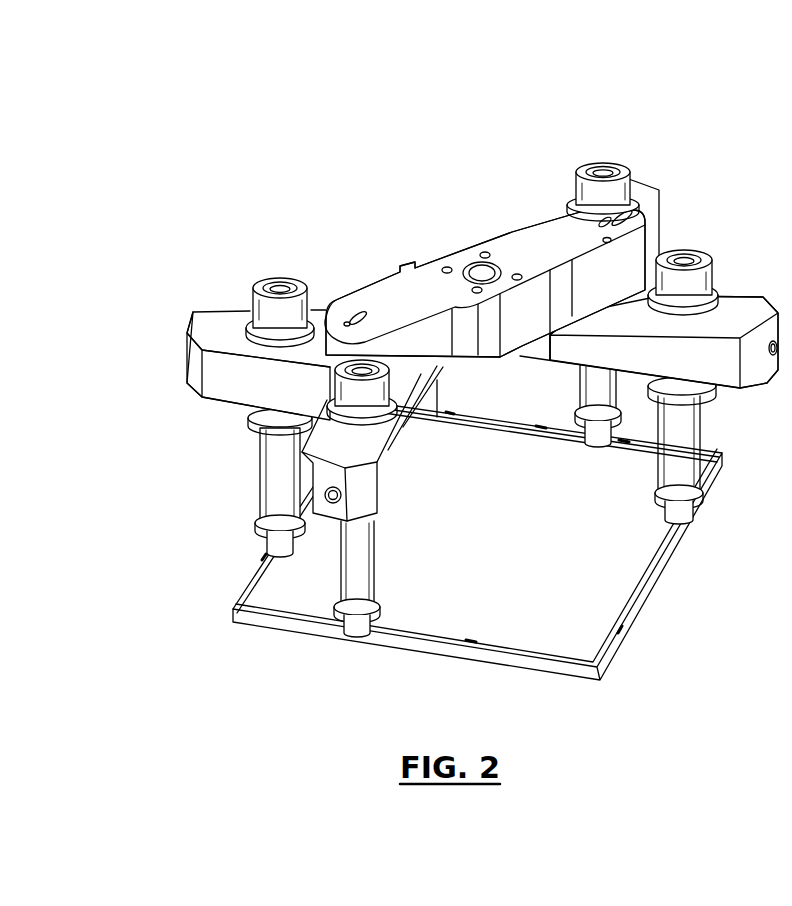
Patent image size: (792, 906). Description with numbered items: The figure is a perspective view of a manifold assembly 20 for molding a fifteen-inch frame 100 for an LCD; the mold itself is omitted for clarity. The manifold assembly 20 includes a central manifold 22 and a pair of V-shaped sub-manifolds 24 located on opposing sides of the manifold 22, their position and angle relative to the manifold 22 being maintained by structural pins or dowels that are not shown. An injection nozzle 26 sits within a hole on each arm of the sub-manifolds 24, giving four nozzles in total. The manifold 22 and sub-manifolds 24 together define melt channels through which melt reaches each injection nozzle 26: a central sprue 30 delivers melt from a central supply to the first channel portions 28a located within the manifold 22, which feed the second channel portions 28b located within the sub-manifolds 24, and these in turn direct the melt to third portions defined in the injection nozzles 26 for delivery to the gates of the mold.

The manifold assembly 20 is at (286, 126).
The manifold 22 is at (370, 292).
The V-shaped sub-manifold 24 is at (190, 333).
The injection nozzle 26 is at (378, 567).
The melt channel first portion 28a is at (254, 428).
The melt channel second portion 28b is at (325, 495).
The central sprue 30 is at (484, 253).
The frame 100 is at (607, 665).